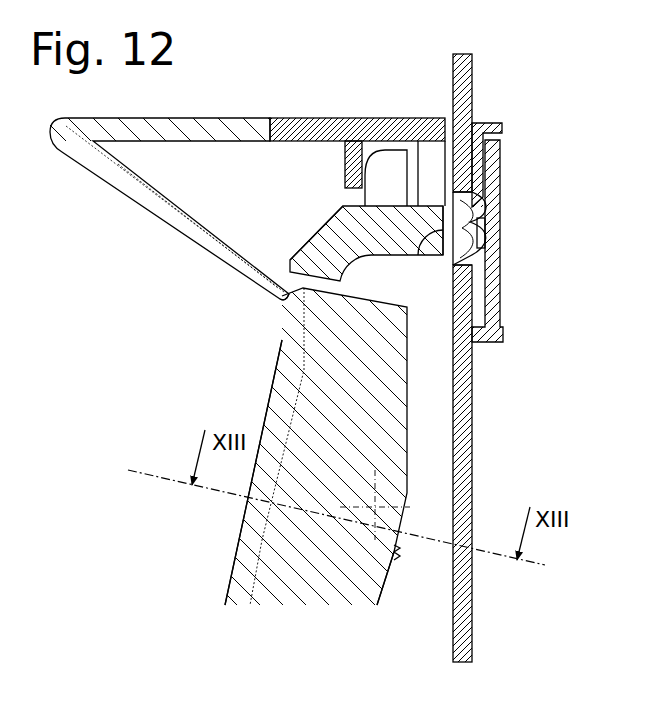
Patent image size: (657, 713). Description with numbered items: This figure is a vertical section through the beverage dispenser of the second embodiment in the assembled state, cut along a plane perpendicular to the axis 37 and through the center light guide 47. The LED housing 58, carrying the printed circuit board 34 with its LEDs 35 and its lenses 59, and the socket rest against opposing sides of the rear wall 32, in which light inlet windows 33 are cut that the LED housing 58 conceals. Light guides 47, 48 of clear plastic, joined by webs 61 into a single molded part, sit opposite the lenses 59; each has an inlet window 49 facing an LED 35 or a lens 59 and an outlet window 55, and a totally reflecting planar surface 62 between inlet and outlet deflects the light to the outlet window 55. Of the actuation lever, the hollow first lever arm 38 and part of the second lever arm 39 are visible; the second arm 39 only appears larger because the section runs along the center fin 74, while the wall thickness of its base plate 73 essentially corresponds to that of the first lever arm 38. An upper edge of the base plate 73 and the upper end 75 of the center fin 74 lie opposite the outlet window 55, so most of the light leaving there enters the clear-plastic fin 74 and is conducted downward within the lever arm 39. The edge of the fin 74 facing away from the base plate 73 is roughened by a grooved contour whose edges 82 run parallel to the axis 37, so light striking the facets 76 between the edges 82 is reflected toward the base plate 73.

The rear wall 32 is at (472, 418).
The light inlet window 33 is at (457, 265).
The printed circuit board 34 is at (493, 202).
The LED 35 is at (483, 232).
The axis 37 is at (375, 507).
The first lever arm 38 is at (140, 162).
The second lever arm 39 is at (180, 452).
The light guide 47 is at (357, 233).
The light guide 48 is at (371, 150).
The inlet window 49 is at (421, 245).
The outlet window 55 is at (303, 282).
The LED housing 58 is at (497, 125).
The lens 59 is at (447, 235).
The web 61 is at (383, 173).
The totally reflecting planar surface 62 is at (318, 232).
The base plate 73 is at (238, 598).
The center fin 74 is at (307, 580).
The upper end 75 is at (318, 292).
The facet 76 is at (387, 560).
The edge 82 is at (397, 556).